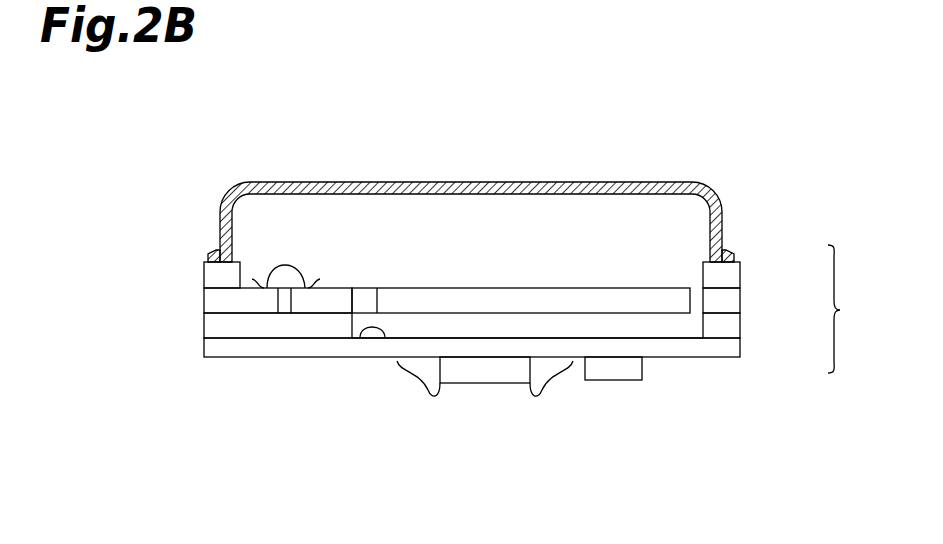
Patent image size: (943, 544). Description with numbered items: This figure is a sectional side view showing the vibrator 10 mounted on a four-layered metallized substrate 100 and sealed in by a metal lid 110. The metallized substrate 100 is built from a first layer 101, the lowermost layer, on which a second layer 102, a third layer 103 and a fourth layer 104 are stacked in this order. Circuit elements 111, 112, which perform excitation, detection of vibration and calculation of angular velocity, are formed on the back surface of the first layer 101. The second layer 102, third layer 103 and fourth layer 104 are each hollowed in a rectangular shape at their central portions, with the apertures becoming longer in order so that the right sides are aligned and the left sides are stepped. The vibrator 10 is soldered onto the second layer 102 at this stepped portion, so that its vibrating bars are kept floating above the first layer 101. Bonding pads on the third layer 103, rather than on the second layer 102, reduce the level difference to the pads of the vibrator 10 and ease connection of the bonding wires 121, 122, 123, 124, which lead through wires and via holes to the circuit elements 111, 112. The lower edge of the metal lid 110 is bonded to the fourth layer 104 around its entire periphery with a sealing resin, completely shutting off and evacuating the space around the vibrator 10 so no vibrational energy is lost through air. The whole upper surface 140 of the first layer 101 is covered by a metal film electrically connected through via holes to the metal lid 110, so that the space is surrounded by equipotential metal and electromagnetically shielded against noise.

The vibrator 10 is at (672, 307).
The metallized substrate 100 is at (508, 311).
The first layer 101 is at (742, 349).
The second layer 102 is at (205, 326).
The third layer 103 is at (205, 301).
The fourth layer 104 is at (205, 276).
The metal lid 110 is at (618, 183).
The circuit element 111 is at (485, 383).
The circuit element 112 is at (615, 380).
The bonding wire 121 is at (345, 260).
The bonding wire 122 is at (345, 260).
The bonding wire 123 is at (345, 260).
The bonding wire 124 is at (302, 271).
The upper surface of the first layer 140 is at (363, 336).